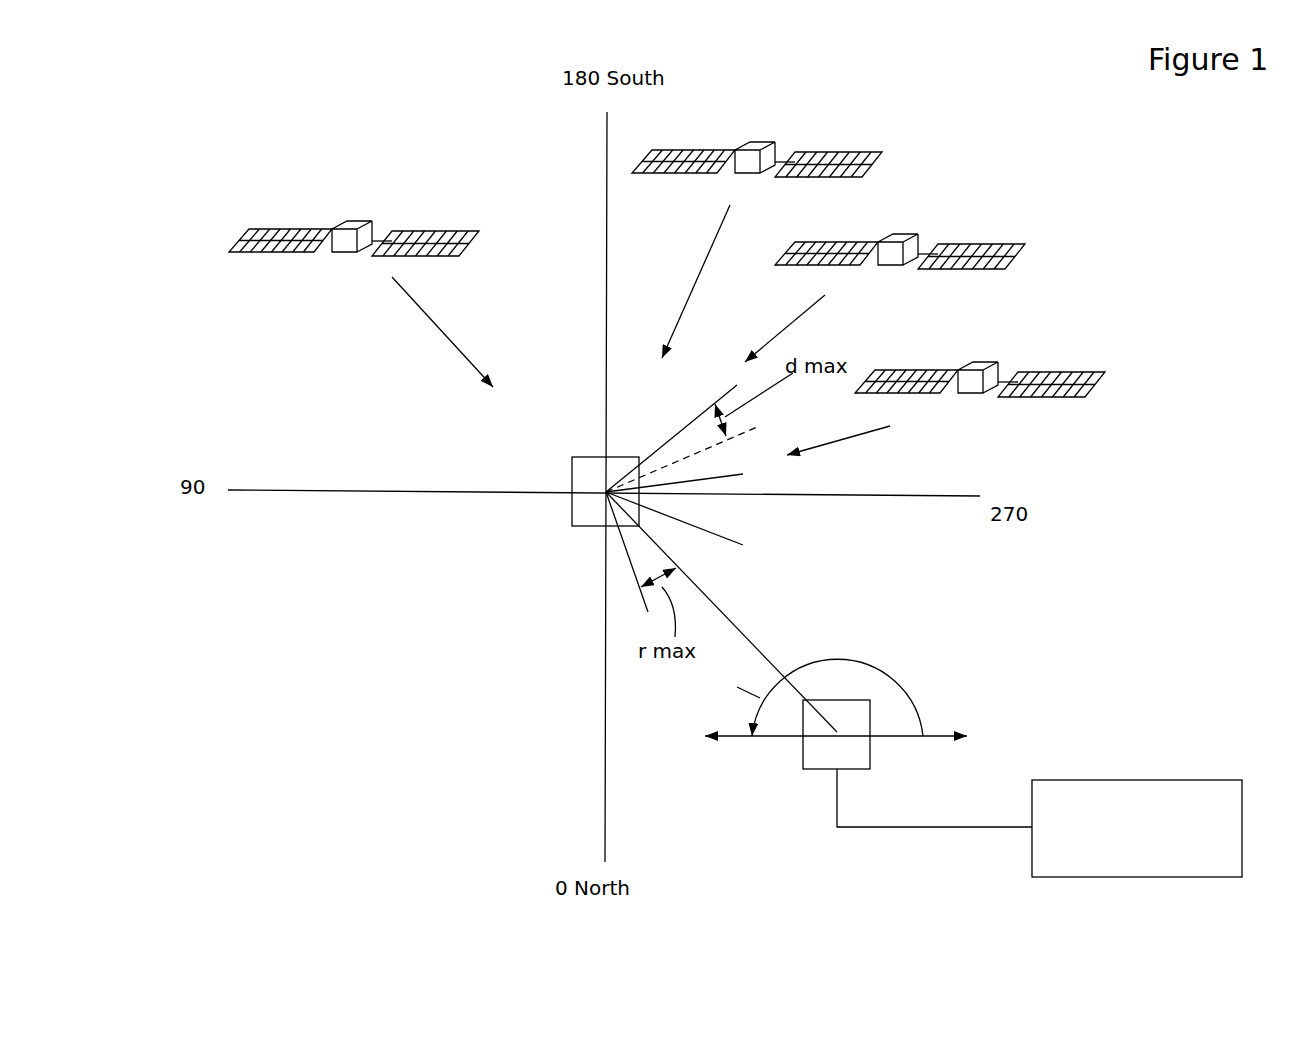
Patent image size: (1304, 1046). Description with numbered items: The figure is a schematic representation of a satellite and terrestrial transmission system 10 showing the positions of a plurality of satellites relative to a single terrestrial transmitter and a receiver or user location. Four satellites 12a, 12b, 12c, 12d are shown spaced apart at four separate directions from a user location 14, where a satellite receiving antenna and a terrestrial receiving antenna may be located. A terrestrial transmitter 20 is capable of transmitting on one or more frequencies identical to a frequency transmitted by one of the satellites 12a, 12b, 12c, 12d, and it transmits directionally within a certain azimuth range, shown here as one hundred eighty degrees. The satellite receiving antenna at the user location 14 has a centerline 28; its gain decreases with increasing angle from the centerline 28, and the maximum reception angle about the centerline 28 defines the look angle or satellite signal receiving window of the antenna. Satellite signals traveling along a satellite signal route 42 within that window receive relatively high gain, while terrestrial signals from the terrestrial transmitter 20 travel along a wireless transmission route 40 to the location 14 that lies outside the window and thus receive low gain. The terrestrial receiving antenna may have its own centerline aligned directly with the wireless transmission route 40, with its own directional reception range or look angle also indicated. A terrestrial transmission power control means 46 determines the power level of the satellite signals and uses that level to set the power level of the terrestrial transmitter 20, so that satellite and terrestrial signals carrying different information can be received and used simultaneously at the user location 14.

The satellite communication system 10 is at (437, 668).
The satellite 12a is at (361, 280).
The satellite 12b is at (757, 234).
The satellite 12c is at (885, 281).
The satellite 12d is at (982, 365).
The user location 14 is at (572, 507).
The terrestrial transmitter 20 is at (802, 756).
The centerline 28 is at (740, 435).
The wireless transmission route 40 is at (725, 615).
The satellite signal route 42 is at (838, 440).
The terrestrial transmission power control means 46 is at (1140, 780).